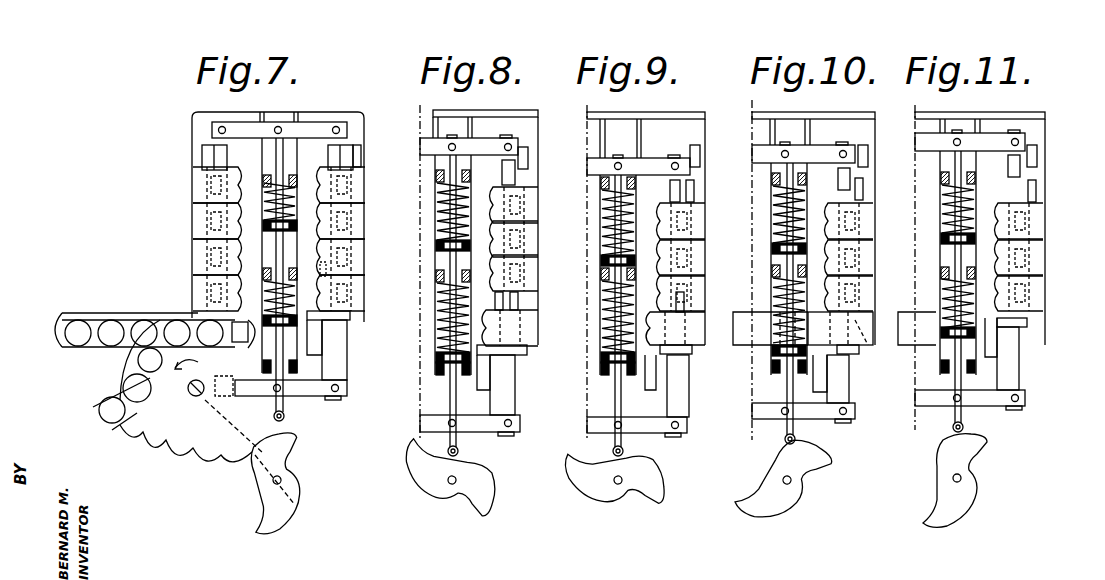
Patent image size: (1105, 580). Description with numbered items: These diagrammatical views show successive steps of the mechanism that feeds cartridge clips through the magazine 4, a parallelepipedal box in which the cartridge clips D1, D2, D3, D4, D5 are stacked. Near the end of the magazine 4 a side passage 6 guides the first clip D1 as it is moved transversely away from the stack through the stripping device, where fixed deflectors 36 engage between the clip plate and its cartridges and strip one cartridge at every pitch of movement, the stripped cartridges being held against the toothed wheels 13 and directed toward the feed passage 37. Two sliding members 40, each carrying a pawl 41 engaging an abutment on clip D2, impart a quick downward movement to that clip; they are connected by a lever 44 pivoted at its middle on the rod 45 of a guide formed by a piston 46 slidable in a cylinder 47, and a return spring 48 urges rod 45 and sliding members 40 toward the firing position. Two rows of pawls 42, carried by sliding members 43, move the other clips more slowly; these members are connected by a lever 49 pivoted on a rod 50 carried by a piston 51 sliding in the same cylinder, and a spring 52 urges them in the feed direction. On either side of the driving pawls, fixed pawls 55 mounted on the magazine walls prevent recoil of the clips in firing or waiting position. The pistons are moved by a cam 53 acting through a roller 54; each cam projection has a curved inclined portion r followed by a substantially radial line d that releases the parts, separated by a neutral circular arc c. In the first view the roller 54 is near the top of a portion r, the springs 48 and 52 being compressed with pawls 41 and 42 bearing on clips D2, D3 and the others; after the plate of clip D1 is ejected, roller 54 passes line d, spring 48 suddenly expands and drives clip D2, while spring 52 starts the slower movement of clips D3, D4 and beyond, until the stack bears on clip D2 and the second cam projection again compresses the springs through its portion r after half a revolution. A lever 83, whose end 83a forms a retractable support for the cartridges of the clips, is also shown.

In FIG. 7, the magazine 4 is at (228, 240).
In FIG. 7, the side passage 6 is at (118, 313).
In FIG. 7, the toothed wheels 13 is at (123, 388).
In FIG. 7, the fixed deflectors 36 is at (138, 358).
In FIG. 7, the feed passage 37 is at (135, 427).
In FIG. 7, the sliding members 40 is at (347, 330).
In FIG. 8, the sliding members 40 is at (515, 375).
In FIG. 9, the sliding members 40 is at (678, 386).
In FIG. 10, the sliding members 40 is at (838, 379).
In FIG. 11, the sliding members 40 is at (1008, 358).
In FIG. 7, the pawls 41 is at (225, 262).
In FIG. 8, the pawls 41 is at (522, 302).
In FIG. 9, the pawls 41 is at (686, 302).
In FIG. 10, the pawls 41 is at (869, 358).
In FIG. 7, the pawls 42 is at (210, 152).
In FIG. 8, the pawls 42 is at (508, 172).
In FIG. 10, the pawls 42 is at (850, 178).
In FIG. 11, the pawls 42 is at (1022, 178).
In FIG. 7, the sliding members 43 is at (222, 126).
In FIG. 8, the sliding members 43 is at (480, 147).
In FIG. 9, the sliding members 43 is at (647, 166).
In FIG. 10, the sliding members 43 is at (814, 154).
In FIG. 11, the sliding members 43 is at (986, 142).
In FIG. 7, the lever 44 is at (305, 388).
In FIG. 8, the lever 44 is at (470, 425).
In FIG. 9, the lever 44 is at (637, 427).
In FIG. 10, the lever 44 is at (803, 413).
In FIG. 11, the lever 44 is at (970, 400).
In FIG. 7, the rod 45 is at (262, 398).
In FIG. 7, the piston 46 is at (243, 334).
In FIG. 7, the cylinder 47 is at (284, 358).
In FIG. 8, the cylinder 47 is at (453, 301).
In FIG. 9, the cylinder 47 is at (618, 311).
In FIG. 10, the cylinder 47 is at (790, 299).
In FIG. 11, the cylinder 47 is at (958, 287).
In FIG. 7, the return spring 48 is at (195, 294).
In FIG. 7, the lever 49 is at (300, 130).
In FIG. 8, the lever 49 is at (469, 145).
In FIG. 9, the lever 49 is at (643, 160).
In FIG. 10, the lever 49 is at (810, 154).
In FIG. 11, the lever 49 is at (976, 148).
In FIG. 7, the rod 50 is at (278, 126).
In FIG. 7, the piston 51 is at (225, 214).
In FIG. 7, the spring 52 is at (272, 192).
In FIG. 8, the spring 52 is at (462, 210).
In FIG. 9, the spring 52 is at (635, 190).
In FIG. 10, the spring 52 is at (790, 198).
In FIG. 11, the spring 52 is at (958, 263).
In FIG. 7, the cam 53 is at (300, 503).
In FIG. 8, the cam 53 is at (432, 480).
In FIG. 9, the cam 53 is at (615, 478).
In FIG. 10, the cam 53 is at (812, 468).
In FIG. 11, the cam 53 is at (970, 447).
In FIG. 7, the roller 54 is at (285, 418).
In FIG. 8, the roller 54 is at (460, 452).
In FIG. 9, the roller 54 is at (618, 451).
In FIG. 10, the roller 54 is at (790, 439).
In FIG. 11, the roller 54 is at (958, 427).
In FIG. 7, the pawls 55 is at (356, 156).
In FIG. 8, the pawls 55 is at (520, 177).
In FIG. 9, the pawls 55 is at (692, 196).
In FIG. 7, the lever 83 is at (322, 338).
In FIG. 8, the lever 83 is at (483, 388).
In FIG. 9, the lever 83 is at (650, 386).
In FIG. 10, the lever 83 is at (820, 382).
In FIG. 11, the lever 83 is at (992, 352).
In FIG. 7, the end of lever 83a is at (335, 316).
In FIG. 8, the end of lever 83a is at (510, 348).
In FIG. 9, the end of lever 83a is at (680, 350).
In FIG. 10, the end of lever 83a is at (850, 352).
In FIG. 11, the end of lever 83a is at (1020, 324).
In FIG. 7, the cartridge clip D1 is at (62, 334).
In FIG. 7, the cartridge clip D2 is at (350, 286).
In FIG. 8, the cartridge clip D2 is at (524, 333).
In FIG. 9, the cartridge clip D2 is at (660, 332).
In FIG. 10, the cartridge clip D2 is at (775, 335).
In FIG. 11, the cartridge clip D2 is at (925, 338).
In FIG. 7, the cartridge clip D3 is at (350, 255).
In FIG. 8, the cartridge clip D3 is at (524, 278).
In FIG. 9, the cartridge clip D3 is at (690, 282).
In FIG. 10, the cartridge clip D3 is at (866, 288).
In FIG. 11, the cartridge clip D3 is at (1038, 288).
In FIG. 7, the cartridge clip D4 is at (350, 222).
In FIG. 8, the cartridge clip D4 is at (524, 245).
In FIG. 9, the cartridge clip D4 is at (690, 250).
In FIG. 10, the cartridge clip D4 is at (868, 260).
In FIG. 11, the cartridge clip D4 is at (1038, 252).
In FIG. 7, the cartridge clip D5 is at (350, 187).
In FIG. 7, the circular arc c is at (304, 470).
In FIG. 8, the circular arc c is at (439, 490).
In FIG. 9, the circular arc c is at (608, 465).
In FIG. 10, the circular arc c is at (766, 472).
In FIG. 11, the circular arc c is at (985, 478).
In FIG. 7, the radial line d is at (288, 440).
In FIG. 8, the radial line d is at (430, 456).
In FIG. 9, the radial line d is at (600, 470).
In FIG. 10, the radial line d is at (752, 475).
In FIG. 11, the radial line d is at (940, 505).
In FIG. 7, the curved portion r is at (255, 465).
In FIG. 9, the curved portion r is at (650, 460).
In FIG. 10, the curved portion r is at (812, 452).
In FIG. 11, the curved portion r is at (944, 455).